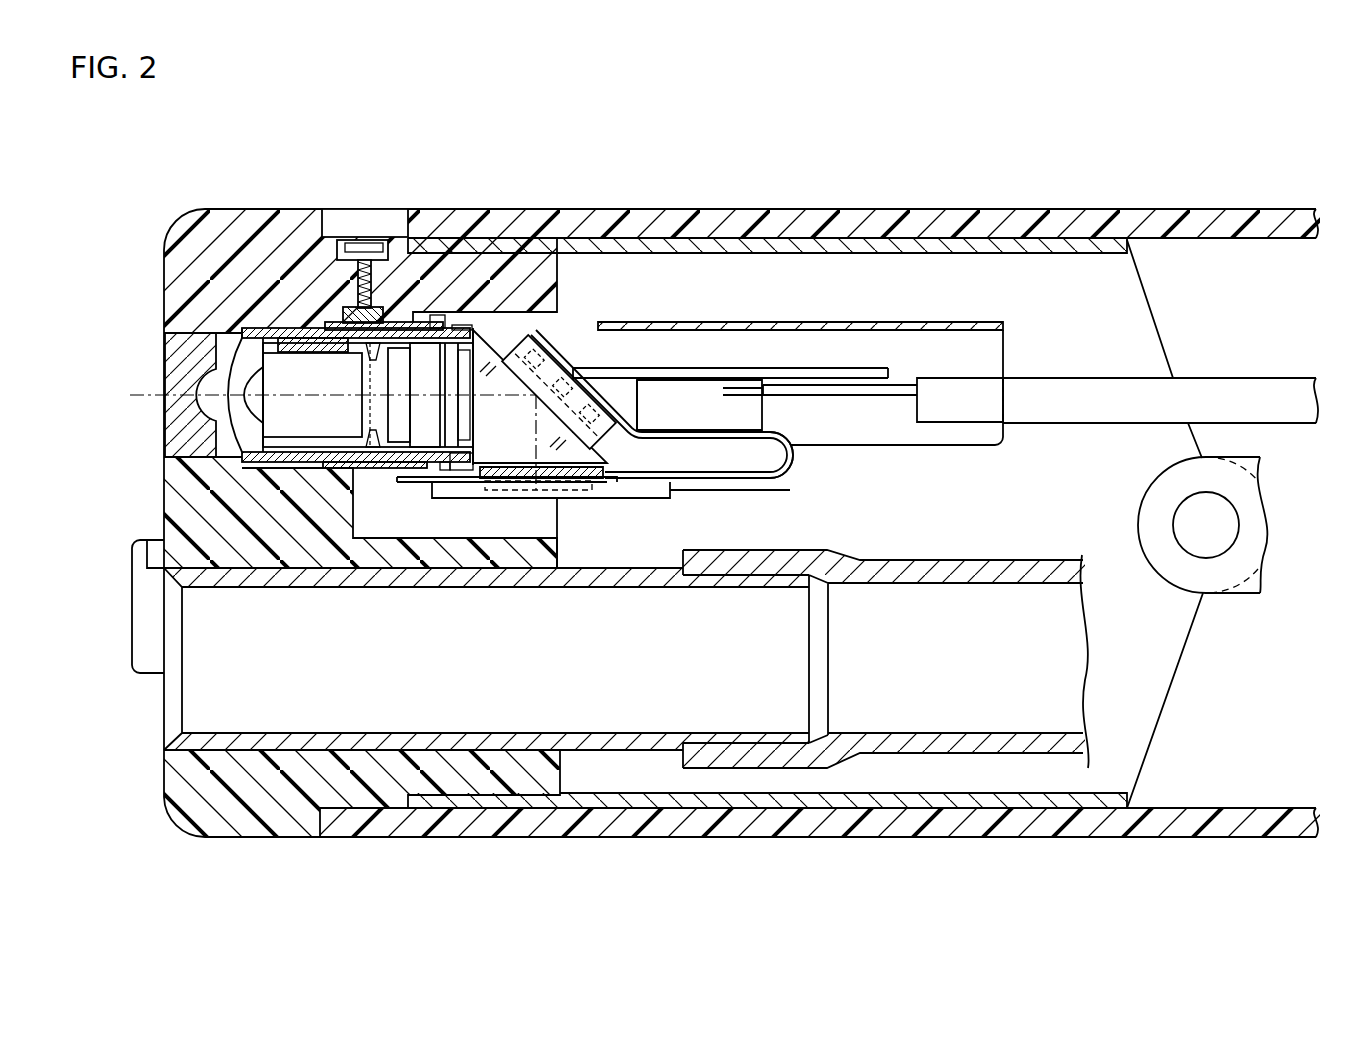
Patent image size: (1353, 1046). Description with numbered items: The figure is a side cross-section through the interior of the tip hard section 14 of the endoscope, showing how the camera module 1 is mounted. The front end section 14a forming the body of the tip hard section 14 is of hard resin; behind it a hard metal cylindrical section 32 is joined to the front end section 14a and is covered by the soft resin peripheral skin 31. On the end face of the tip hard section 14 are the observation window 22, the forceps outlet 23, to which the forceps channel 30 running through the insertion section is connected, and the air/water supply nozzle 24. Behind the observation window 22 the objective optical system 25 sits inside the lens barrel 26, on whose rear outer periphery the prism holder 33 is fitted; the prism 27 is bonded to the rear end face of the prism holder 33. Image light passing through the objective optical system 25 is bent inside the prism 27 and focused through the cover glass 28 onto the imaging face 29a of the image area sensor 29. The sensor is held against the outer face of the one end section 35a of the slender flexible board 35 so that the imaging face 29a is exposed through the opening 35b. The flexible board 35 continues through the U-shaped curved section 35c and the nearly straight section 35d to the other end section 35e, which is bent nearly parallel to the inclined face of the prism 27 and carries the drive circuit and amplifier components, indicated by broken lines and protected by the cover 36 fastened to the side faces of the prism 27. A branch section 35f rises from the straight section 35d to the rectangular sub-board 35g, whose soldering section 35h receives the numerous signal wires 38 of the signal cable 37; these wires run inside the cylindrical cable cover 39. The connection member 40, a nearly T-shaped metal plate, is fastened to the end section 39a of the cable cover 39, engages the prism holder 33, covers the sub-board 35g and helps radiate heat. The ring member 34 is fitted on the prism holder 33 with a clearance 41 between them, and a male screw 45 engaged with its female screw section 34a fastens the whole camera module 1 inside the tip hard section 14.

The camera module 1 is at (777, 310).
The tip hard section 14 is at (623, 198).
The front end section 14a is at (172, 287).
The observation window 22 is at (172, 364).
The forceps outlet 23 is at (200, 732).
The air/water supply nozzle 24 is at (148, 539).
The objective optical system 25 is at (243, 440).
The lens barrel 26 is at (262, 322).
The prism 27 is at (517, 328).
The cover glass 28 is at (576, 482).
The image area sensor 29 is at (527, 509).
The imaging face 29a is at (512, 463).
The forceps channel 30 is at (920, 757).
The peripheral skin 31 is at (467, 210).
The cylindrical section 32 is at (579, 250).
The prism holder 33 is at (296, 330).
The ring member 34 is at (390, 322).
The female screw section 34a is at (330, 313).
The flexible board 35 is at (754, 487).
The one end section 35a is at (418, 480).
The opening 35b is at (613, 482).
The curved section 35c is at (793, 458).
The straight section 35d is at (698, 433).
The other end section 35e is at (574, 366).
The branch section 35f is at (708, 400).
The soldering section 35h is at (665, 398).
The sub-board 35g is at (828, 322).
The cover 36 is at (548, 333).
The signal cable 37 is at (1256, 372).
The signal wires 38 is at (883, 393).
The cable cover 39 is at (1090, 372).
The end section of the cable cover 39a is at (963, 410).
The connection member 40 is at (911, 309).
The clearance 41 is at (430, 323).
The male screw 45 is at (364, 247).